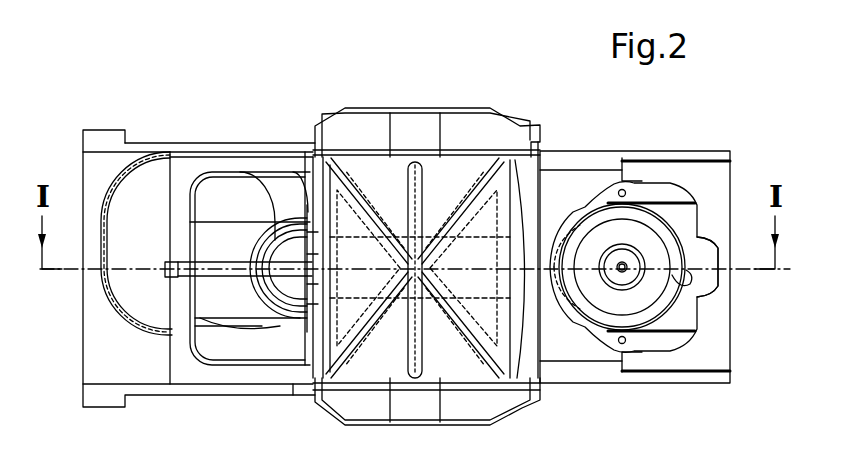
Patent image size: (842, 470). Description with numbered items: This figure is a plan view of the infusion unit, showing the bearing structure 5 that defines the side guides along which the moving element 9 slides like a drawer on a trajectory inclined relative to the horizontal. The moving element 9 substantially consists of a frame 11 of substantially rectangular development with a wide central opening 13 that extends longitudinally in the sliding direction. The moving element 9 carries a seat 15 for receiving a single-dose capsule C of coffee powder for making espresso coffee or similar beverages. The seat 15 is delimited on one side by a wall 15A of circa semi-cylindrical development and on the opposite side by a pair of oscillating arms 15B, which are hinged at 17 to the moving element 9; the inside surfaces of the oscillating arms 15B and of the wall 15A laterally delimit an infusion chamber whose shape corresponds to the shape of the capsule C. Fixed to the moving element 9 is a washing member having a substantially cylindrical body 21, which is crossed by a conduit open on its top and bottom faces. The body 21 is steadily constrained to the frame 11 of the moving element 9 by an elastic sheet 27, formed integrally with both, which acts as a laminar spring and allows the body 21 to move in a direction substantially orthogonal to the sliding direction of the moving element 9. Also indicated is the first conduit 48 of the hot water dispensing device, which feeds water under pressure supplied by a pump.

The bearing structure 5 is at (133, 142).
The moving element 9 is at (738, 147).
The frame 11 is at (273, 164).
The central opening 13 is at (232, 172).
The seat 15 is at (662, 197).
The wall 15A is at (699, 312).
The oscillating arms 15B is at (568, 215).
The hinge 17 is at (625, 190).
The cylindrical body 21 is at (300, 323).
The elastic sheet 27 is at (220, 236).
The first conduit 48 is at (215, 262).
The single-dose capsule C is at (670, 231).